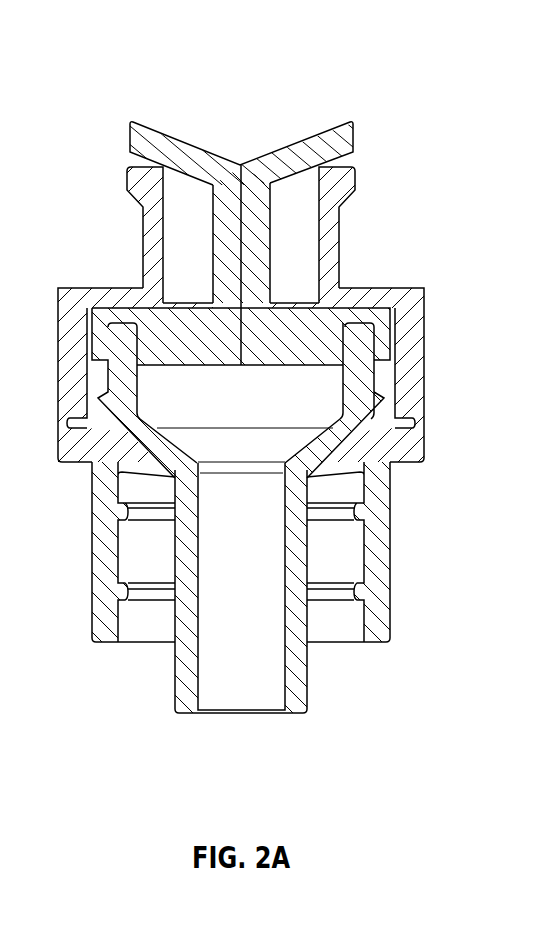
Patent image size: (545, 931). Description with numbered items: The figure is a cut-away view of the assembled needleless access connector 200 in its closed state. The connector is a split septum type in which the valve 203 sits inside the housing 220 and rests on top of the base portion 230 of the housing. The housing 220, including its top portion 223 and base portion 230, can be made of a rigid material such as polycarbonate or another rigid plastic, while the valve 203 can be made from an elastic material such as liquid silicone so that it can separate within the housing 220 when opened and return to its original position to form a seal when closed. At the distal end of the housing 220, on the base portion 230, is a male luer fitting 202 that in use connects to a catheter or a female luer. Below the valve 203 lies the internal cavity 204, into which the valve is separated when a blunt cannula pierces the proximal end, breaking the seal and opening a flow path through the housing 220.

The needleless access connector 200 is at (138, 98).
The male luer fitting 202 is at (117, 618).
The valve 203 is at (272, 215).
The internal cavity 204 is at (303, 256).
The housing 220 is at (340, 280).
The top portion 223 is at (143, 243).
The base portion 230 is at (92, 542).